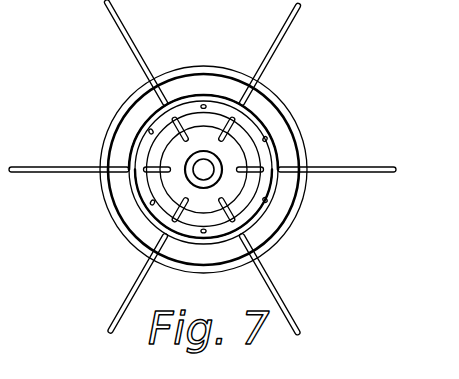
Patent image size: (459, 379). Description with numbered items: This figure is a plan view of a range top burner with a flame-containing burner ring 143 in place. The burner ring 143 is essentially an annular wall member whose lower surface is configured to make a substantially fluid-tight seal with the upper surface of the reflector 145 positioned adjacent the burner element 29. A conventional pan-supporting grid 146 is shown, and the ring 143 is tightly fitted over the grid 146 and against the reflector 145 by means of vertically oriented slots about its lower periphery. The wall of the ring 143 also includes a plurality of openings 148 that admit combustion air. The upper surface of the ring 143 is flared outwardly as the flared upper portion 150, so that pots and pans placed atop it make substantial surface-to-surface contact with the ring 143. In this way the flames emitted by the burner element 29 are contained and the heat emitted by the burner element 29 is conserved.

The burner element 29 is at (234, 183).
The flame-containing burner ring 143 is at (267, 120).
The reflector 145 is at (272, 220).
The pan-supporting grid 146 is at (266, 70).
The openings 148 is at (206, 104).
The flared upper portion 150 is at (274, 140).